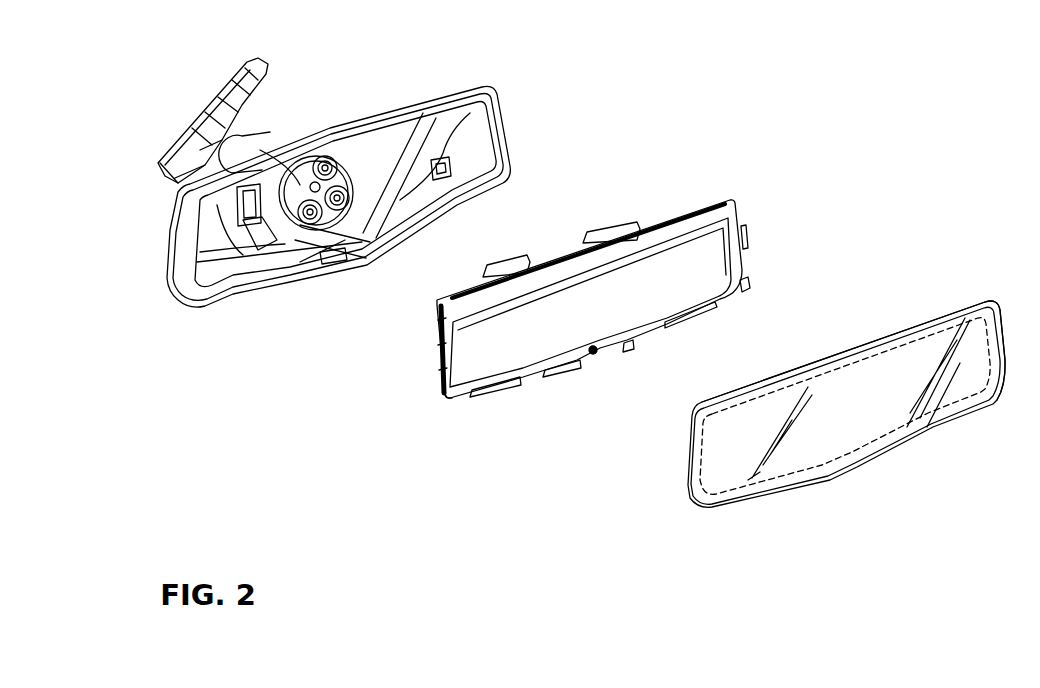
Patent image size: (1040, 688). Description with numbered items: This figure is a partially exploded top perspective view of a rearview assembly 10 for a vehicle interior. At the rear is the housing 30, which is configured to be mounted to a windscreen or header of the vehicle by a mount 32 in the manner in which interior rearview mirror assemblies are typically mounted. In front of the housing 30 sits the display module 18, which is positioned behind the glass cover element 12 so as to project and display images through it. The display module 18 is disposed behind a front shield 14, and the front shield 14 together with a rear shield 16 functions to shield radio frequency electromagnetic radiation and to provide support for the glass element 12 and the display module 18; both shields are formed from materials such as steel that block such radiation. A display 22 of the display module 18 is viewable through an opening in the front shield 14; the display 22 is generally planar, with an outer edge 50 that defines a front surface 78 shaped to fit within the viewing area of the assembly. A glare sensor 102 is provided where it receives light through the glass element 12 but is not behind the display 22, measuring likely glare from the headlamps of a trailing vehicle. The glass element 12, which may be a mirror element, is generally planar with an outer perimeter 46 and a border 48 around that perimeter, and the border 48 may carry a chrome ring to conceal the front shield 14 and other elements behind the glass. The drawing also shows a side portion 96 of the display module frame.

The rearview assembly 10 is at (810, 136).
The glass cover element 12 is at (816, 385).
The front shield 14 is at (711, 214).
The rear shield 16 is at (620, 216).
The display module 18 is at (433, 418).
The display 22 is at (557, 282).
The housing 30 is at (467, 92).
The mount 32 is at (260, 148).
The outer perimeter 46 is at (937, 312).
The border 48 is at (998, 328).
The outer edge 50 is at (745, 236).
The front surface 78 is at (717, 265).
The side strip 96 is at (432, 378).
The glare sensor 102 is at (595, 358).